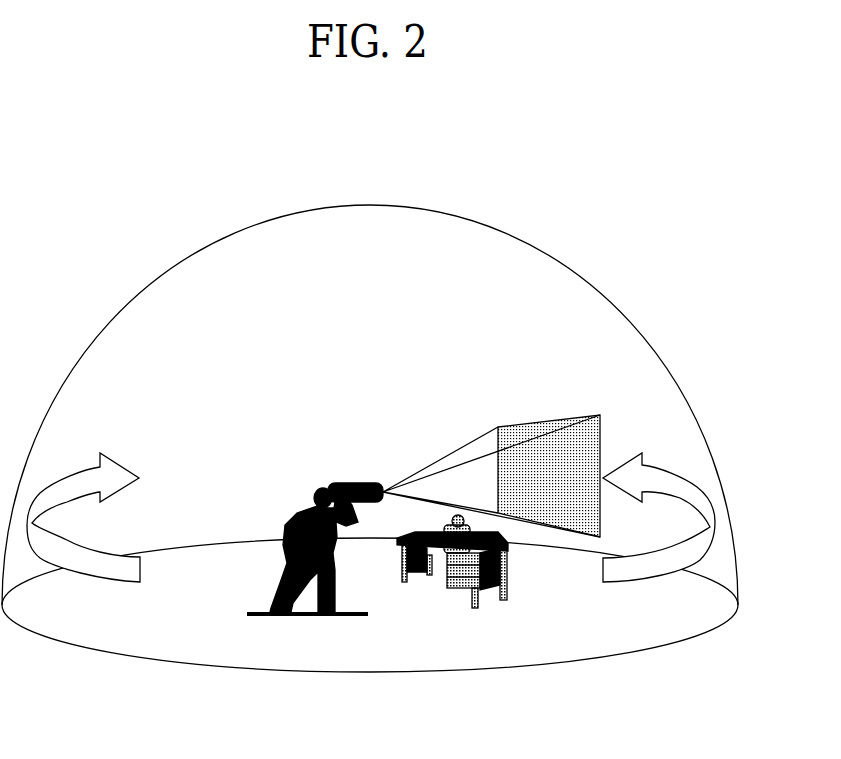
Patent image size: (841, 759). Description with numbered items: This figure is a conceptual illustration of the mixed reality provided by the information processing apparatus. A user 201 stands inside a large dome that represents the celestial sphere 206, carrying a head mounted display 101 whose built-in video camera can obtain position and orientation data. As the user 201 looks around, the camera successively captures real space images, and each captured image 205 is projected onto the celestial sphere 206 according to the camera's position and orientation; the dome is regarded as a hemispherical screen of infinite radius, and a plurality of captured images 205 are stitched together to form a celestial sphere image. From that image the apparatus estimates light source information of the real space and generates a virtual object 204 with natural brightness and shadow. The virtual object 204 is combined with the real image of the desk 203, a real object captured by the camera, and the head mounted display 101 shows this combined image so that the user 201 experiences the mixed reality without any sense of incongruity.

The head mounted display 101 is at (348, 486).
The user 201 is at (284, 527).
The desk 203 is at (503, 585).
The virtual object 204 is at (420, 567).
The captured image 205 is at (568, 418).
The celestial sphere 206 is at (500, 232).